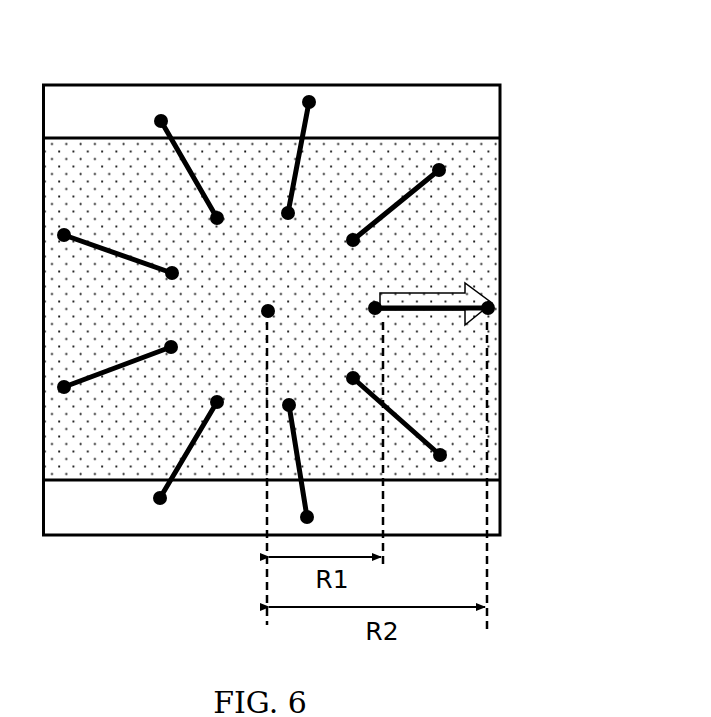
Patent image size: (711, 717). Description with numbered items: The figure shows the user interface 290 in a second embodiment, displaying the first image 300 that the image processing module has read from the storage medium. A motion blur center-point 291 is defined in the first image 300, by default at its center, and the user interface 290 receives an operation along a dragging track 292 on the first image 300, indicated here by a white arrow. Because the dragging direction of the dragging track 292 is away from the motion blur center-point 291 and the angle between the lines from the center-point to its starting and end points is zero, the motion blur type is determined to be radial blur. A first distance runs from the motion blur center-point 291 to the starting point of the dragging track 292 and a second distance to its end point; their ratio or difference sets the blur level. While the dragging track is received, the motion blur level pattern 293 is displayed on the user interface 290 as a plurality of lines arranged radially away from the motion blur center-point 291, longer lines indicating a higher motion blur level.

The user interface 290 is at (430, 84).
The motion blur center-point 291 is at (268, 304).
The dragging track 292 is at (430, 293).
The motion blur level pattern 293 is at (400, 418).
The first image 300 is at (487, 181).